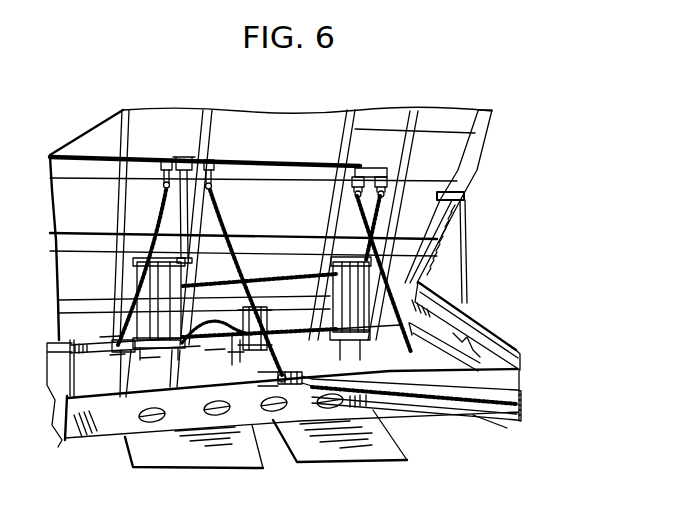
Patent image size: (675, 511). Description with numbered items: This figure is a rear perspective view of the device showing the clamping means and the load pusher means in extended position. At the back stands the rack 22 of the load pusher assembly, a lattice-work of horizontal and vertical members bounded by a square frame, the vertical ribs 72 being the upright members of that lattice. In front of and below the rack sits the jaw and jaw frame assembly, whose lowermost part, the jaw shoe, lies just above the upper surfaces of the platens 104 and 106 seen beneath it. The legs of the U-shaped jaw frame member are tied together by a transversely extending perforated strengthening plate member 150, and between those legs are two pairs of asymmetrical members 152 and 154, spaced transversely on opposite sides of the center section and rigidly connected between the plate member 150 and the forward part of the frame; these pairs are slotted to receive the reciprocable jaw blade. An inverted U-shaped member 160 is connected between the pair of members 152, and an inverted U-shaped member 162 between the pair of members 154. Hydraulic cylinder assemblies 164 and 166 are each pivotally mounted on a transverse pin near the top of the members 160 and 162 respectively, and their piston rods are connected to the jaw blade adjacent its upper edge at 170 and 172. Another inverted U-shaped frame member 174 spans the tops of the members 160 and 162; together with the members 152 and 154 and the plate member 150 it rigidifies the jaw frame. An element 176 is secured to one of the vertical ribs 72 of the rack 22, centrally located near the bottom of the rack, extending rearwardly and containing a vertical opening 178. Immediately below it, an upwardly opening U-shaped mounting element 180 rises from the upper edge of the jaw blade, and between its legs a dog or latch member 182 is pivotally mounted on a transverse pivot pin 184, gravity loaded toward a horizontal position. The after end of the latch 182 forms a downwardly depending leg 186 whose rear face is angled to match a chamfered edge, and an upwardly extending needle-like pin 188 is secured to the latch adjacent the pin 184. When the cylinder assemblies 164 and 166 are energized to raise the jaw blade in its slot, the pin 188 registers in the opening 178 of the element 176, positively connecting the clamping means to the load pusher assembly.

The rack 22 is at (473, 153).
The vertically extending members 72 is at (280, 148).
The platen 104 is at (328, 450).
The platen 106 is at (155, 455).
The perforated strengthening plate member 150 is at (373, 410).
The asymmetrical members 152 is at (118, 382).
The asymmetrical members 154 is at (392, 400).
The inverted U-shaped member 160 is at (133, 293).
The inverted U-shaped member 162 is at (386, 289).
The hydraulic cylinder assembly 164 is at (137, 257).
The hydraulic cylinder assembly 166 is at (385, 249).
The connection of piston rod to jaw blade 170 is at (123, 355).
The connection of piston rod to jaw blade 172 is at (286, 380).
The inverted U-shaped frame member 174 is at (250, 162).
The element 176 is at (237, 283).
The opening 178 is at (263, 297).
The U-shaped mounting element 180 is at (235, 353).
The latch member 182 is at (258, 324).
The transverse pivot pin 184 is at (226, 323).
The downwardly depending leg 186 is at (258, 380).
The needle-like pin 188 is at (250, 353).